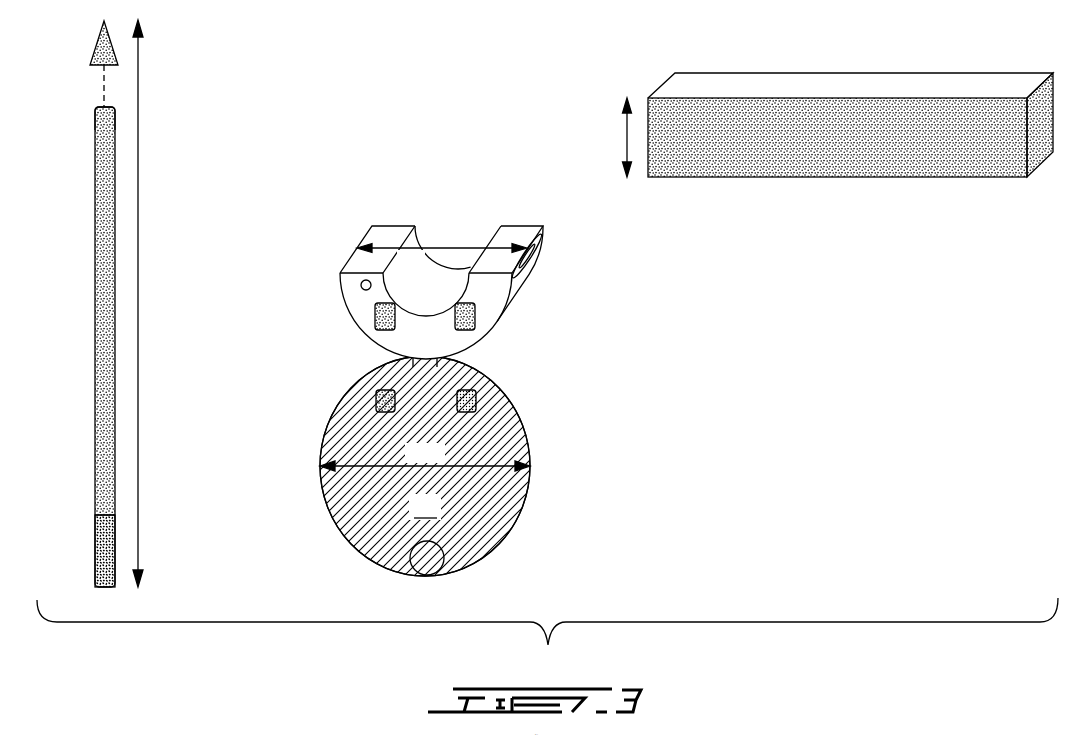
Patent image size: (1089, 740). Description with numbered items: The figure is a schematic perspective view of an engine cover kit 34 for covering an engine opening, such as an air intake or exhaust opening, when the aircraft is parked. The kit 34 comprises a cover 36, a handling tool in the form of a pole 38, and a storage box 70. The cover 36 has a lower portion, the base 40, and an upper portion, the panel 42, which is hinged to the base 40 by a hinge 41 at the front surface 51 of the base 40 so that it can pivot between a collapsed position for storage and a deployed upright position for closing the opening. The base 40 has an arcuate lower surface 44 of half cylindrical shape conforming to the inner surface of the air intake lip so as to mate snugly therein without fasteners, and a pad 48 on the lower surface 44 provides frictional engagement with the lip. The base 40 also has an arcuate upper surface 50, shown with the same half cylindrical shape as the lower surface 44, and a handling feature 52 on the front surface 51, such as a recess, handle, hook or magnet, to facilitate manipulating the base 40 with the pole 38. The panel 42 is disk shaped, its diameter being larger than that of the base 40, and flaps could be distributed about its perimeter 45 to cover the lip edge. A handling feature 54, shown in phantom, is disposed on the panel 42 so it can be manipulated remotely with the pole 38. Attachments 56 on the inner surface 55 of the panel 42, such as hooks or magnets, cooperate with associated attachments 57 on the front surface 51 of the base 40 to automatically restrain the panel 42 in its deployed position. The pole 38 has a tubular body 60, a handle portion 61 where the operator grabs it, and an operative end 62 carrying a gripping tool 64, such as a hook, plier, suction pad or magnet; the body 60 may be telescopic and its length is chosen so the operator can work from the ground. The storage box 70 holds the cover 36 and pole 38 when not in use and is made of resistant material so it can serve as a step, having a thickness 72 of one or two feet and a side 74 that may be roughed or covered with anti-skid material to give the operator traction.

The engine cover kit 34 is at (547, 634).
The cover 36 is at (385, 170).
The pole 38 is at (105, 218).
The base 40 is at (428, 268).
The hinge 41 is at (443, 360).
The panel 42 is at (476, 477).
The lower surface 44 is at (541, 233).
The perimeter 45 is at (530, 440).
The pad 48 is at (523, 264).
The upper surface 50 is at (447, 277).
The front surface 51 is at (362, 310).
The handling feature 52 is at (361, 286).
The handling feature 54 is at (440, 568).
The inner surface 55 is at (425, 507).
The attachment 56 is at (478, 404).
The attachment 57 is at (473, 320).
The tubular body 60 is at (116, 282).
The handle portion 61 is at (96, 557).
The operative end 62 is at (96, 120).
The gripping tool 64 is at (96, 42).
The storage box 70 is at (824, 170).
The thickness 72 is at (613, 137).
The side 74 is at (818, 85).